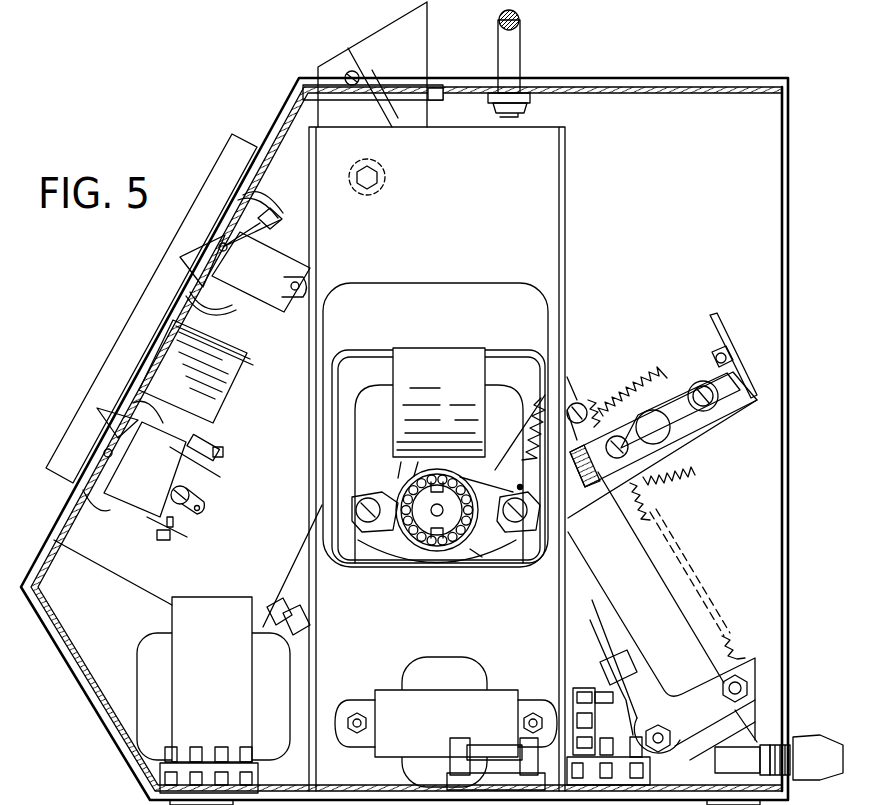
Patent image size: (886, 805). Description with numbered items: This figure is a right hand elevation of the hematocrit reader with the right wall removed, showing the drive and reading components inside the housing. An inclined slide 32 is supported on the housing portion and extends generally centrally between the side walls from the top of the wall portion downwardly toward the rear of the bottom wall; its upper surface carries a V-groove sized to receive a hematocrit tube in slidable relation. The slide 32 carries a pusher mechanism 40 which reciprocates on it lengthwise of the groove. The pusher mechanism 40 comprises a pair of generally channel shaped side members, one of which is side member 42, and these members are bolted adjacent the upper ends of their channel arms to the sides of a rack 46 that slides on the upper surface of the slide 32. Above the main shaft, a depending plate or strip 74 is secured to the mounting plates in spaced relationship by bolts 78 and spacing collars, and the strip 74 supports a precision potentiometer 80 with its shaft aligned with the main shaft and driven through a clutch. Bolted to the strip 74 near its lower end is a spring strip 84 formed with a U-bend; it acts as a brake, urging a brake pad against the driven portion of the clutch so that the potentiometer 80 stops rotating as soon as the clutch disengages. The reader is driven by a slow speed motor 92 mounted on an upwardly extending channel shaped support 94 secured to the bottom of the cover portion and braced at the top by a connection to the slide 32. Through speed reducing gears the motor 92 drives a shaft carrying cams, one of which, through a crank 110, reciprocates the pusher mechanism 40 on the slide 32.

The channel shaped support 94 is at (566, 192).
The slow speed motor 92 is at (525, 368).
The depending strip 74 is at (673, 405).
The bolt 78 is at (700, 385).
The precision potentiometer 80 is at (662, 430).
The spring strip 84 is at (610, 468).
The rack 46 is at (683, 592).
The pusher mechanism 40 is at (707, 683).
The side member 42 is at (748, 697).
The inclined slide 32 is at (737, 733).
The crank 110 is at (593, 622).